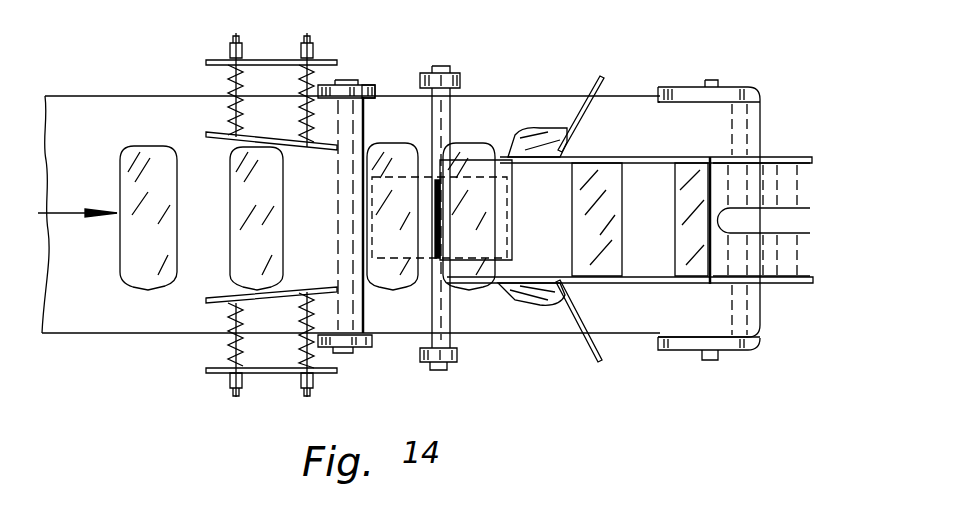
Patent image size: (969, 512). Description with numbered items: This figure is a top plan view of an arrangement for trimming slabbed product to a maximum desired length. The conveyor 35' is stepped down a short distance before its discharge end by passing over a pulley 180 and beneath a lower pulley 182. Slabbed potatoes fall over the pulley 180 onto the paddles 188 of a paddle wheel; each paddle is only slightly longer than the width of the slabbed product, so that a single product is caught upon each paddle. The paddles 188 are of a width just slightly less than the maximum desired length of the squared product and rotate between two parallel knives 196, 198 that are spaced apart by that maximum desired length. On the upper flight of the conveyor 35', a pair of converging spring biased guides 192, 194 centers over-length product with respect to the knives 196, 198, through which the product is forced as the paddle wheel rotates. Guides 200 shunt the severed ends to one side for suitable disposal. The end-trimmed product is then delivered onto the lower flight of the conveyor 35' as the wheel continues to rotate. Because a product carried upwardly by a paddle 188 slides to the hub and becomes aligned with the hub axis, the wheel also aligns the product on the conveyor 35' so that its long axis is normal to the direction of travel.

The conveyor 35' is at (425, 220).
The pulley 180 is at (350, 84).
The lower pulley 182 is at (375, 93).
The paddles 188 is at (433, 182).
The spring biased guide 192 is at (207, 132).
The spring biased guide 194 is at (216, 303).
The knife 196 is at (537, 122).
The knife 198 is at (500, 297).
The guides 200 is at (590, 84).